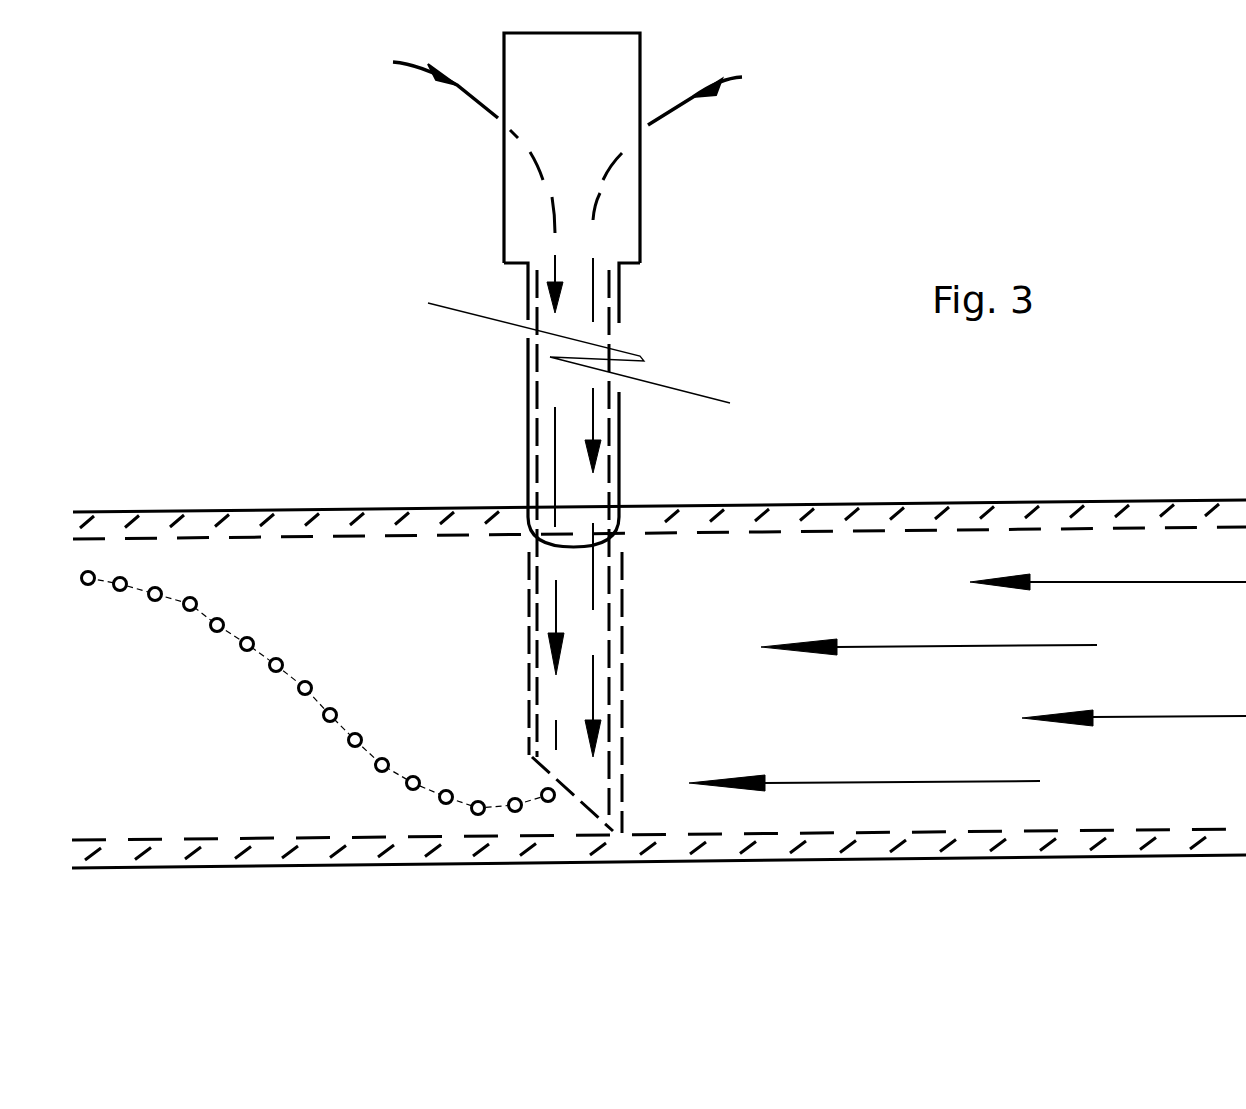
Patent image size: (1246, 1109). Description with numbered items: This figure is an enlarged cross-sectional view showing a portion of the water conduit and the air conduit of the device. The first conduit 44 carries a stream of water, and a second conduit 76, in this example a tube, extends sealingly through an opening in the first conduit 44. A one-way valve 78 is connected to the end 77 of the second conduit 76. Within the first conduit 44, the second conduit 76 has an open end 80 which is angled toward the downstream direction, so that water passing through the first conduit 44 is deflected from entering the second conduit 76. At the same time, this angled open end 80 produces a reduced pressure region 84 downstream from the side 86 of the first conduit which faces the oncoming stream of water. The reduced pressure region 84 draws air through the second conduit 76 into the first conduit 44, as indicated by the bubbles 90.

The first conduit 44 is at (914, 503).
The second conduit 76 is at (605, 320).
The end 77 is at (625, 272).
The one-way valve 78 is at (550, 147).
The open end 80 is at (573, 793).
The reduced pressure region 84 is at (523, 780).
The side 86 is at (967, 682).
The bubbles 90 is at (298, 688).